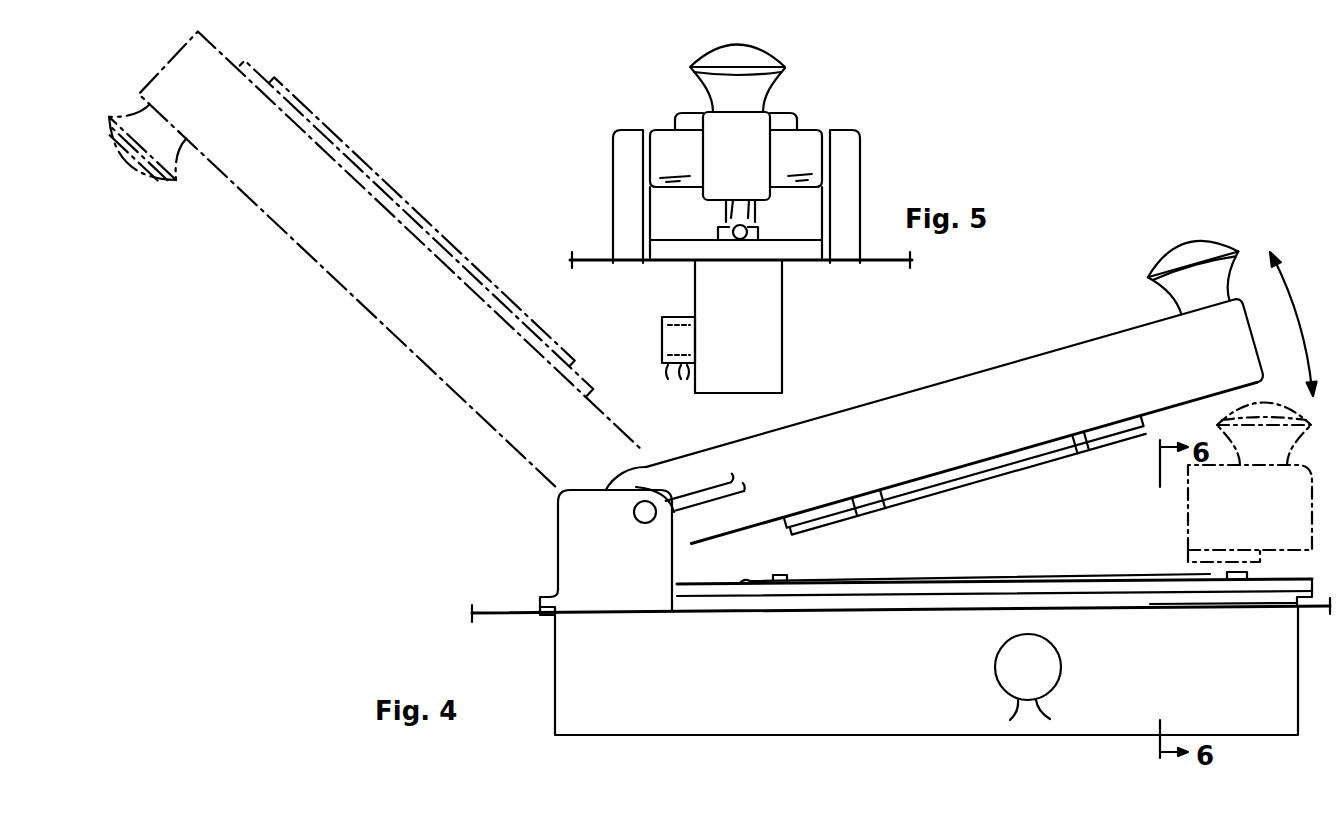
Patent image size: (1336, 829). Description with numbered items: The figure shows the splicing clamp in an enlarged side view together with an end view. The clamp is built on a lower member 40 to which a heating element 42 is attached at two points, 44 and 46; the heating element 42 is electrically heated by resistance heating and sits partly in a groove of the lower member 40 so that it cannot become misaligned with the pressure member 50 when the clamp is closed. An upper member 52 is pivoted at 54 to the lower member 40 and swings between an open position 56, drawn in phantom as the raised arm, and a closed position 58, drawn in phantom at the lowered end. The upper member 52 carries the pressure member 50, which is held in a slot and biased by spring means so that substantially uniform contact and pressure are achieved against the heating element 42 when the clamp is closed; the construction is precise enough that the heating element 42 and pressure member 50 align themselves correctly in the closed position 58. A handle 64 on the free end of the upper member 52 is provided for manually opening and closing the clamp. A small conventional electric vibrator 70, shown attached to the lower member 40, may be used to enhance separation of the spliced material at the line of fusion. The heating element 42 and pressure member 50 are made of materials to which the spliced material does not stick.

In FIG. 4, the lower member 40 is at (903, 605).
In FIG. 5, the lower member 40 is at (745, 264).
In FIG. 4, the heating element 42 is at (1005, 573).
In FIG. 5, the heating element 42 is at (733, 225).
In FIG. 4, the attachment point 44 is at (748, 582).
In FIG. 4, the attachment point 46 is at (1250, 576).
In FIG. 4, the pressure member 50 is at (1005, 487).
In FIG. 5, the pressure member 50 is at (752, 206).
In FIG. 4, the upper member 52 is at (1033, 424).
In FIG. 5, the upper member 52 is at (752, 163).
In FIG. 4, the pivot 54 is at (636, 520).
In FIG. 5, the pivot 54 is at (862, 140).
In FIG. 4, the open position 56 is at (218, 42).
In FIG. 4, the closed position 58 is at (1260, 518).
In FIG. 4, the handle 64 is at (1167, 296).
In FIG. 5, the handle 64 is at (743, 90).
In FIG. 4, the electric vibrator 70 is at (1045, 683).
In FIG. 5, the electric vibrator 70 is at (668, 336).